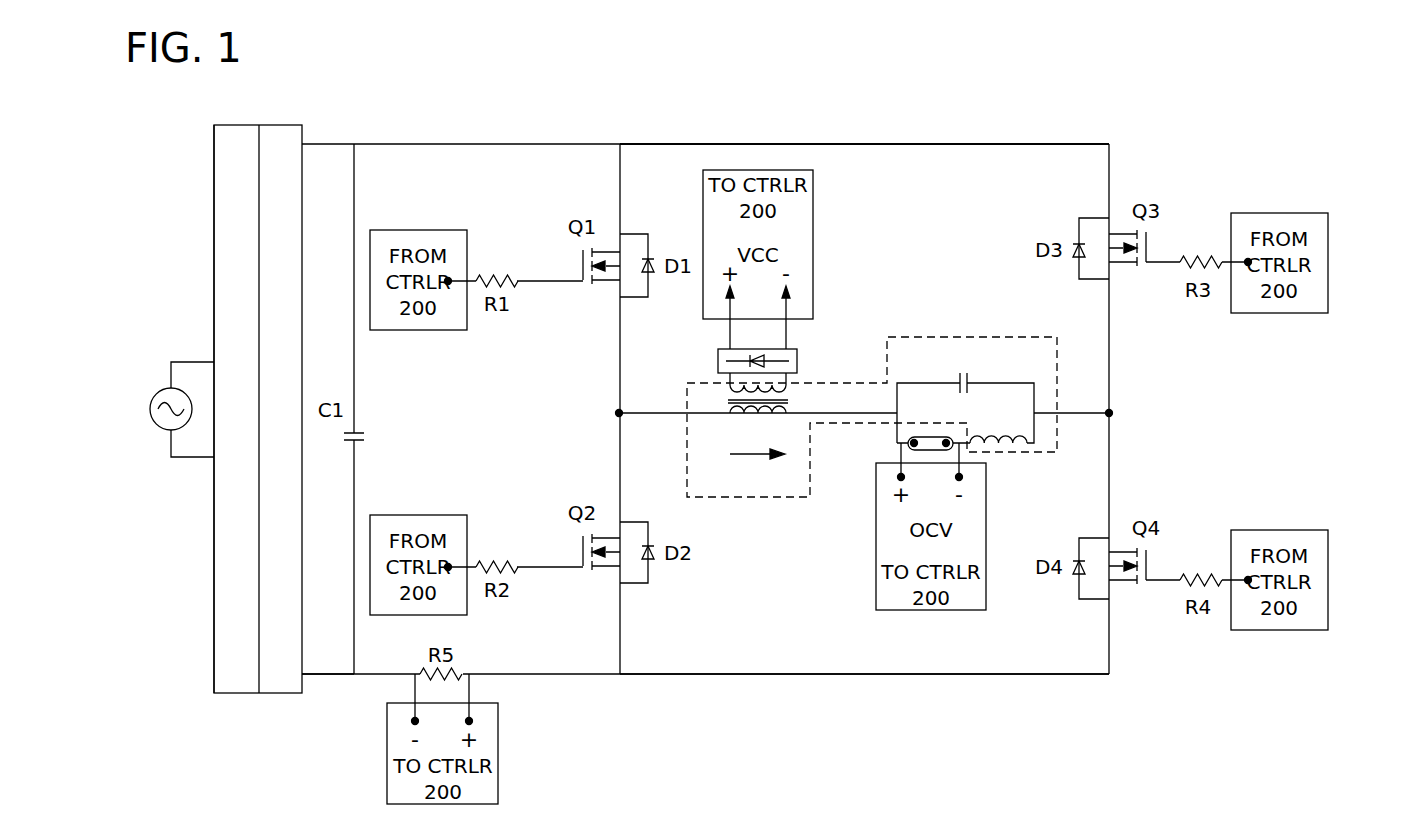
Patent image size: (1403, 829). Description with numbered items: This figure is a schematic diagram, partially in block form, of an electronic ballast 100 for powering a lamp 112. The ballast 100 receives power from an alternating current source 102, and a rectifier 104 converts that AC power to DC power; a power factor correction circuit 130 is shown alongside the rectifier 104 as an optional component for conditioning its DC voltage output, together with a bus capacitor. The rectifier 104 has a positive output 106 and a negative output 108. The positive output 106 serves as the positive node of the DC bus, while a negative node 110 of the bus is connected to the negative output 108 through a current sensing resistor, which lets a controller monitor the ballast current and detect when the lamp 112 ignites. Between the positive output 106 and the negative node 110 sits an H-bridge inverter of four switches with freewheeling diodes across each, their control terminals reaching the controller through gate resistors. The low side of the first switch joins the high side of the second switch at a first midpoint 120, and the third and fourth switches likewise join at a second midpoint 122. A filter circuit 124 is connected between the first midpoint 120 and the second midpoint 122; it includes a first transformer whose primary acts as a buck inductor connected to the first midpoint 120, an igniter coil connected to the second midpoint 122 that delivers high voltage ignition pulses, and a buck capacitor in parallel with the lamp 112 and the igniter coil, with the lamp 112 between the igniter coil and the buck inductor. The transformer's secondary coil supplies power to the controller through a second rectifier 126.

The electronic ballast 100 is at (444, 66).
The alternating current source 102 is at (150, 410).
The rectifier 104 is at (214, 268).
The positive output 106 is at (888, 143).
The negative output 108 is at (323, 678).
The negative node 110 is at (782, 674).
The lamp 112 is at (930, 437).
The first midpoint 120 is at (614, 418).
The second midpoint 122 is at (1112, 416).
The filter circuit 124 is at (942, 337).
The second rectifier 126 is at (805, 362).
The power factor correction circuit 130 is at (279, 680).